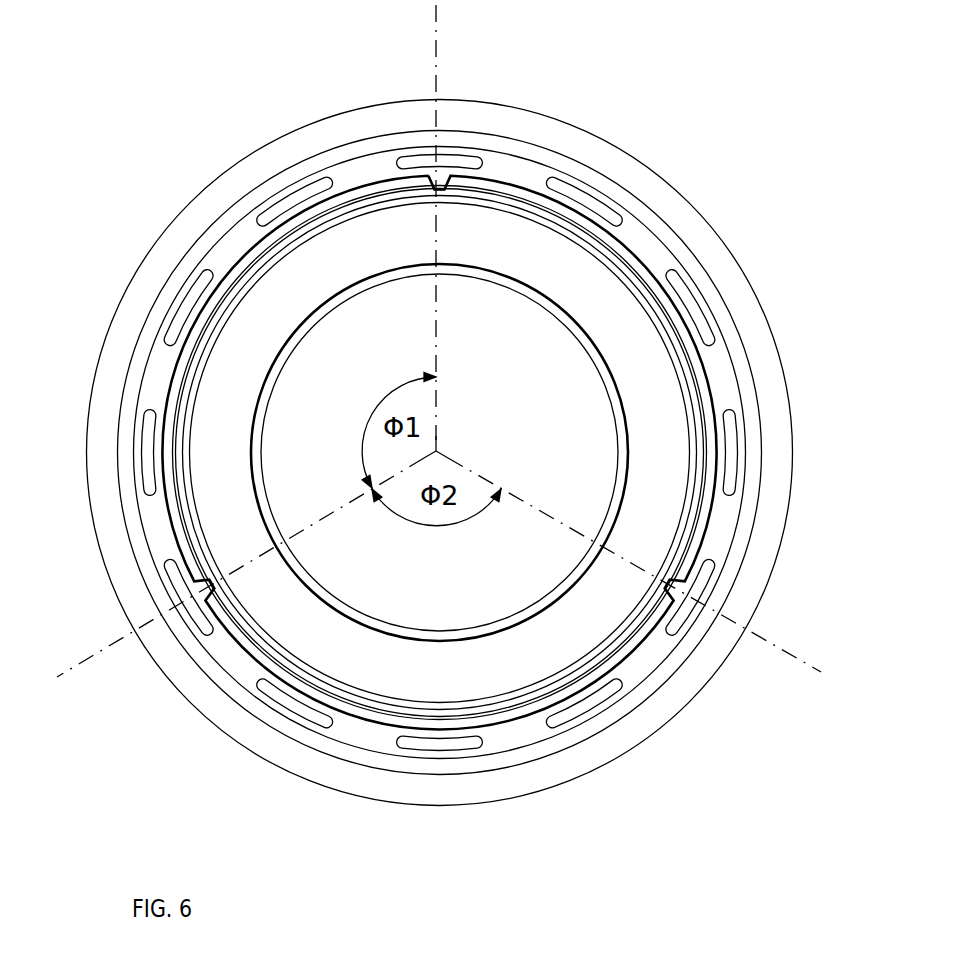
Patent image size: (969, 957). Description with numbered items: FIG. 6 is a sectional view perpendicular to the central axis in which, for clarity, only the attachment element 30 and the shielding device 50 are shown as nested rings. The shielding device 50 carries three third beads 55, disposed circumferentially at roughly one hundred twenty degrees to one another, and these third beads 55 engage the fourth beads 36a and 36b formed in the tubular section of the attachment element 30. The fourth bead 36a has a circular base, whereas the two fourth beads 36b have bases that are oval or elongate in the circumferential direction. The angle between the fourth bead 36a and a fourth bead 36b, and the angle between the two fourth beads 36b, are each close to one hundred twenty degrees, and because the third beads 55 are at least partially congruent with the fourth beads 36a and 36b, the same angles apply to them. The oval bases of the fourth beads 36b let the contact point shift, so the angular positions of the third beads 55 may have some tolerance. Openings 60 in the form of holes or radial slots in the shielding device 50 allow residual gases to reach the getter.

The attachment element 30 is at (205, 172).
The shielding device 50 is at (155, 372).
The third bead 55 is at (438, 189).
The opening 60 is at (582, 197).
The fourth bead 36a is at (433, 182).
The fourth bead 36b is at (214, 590).